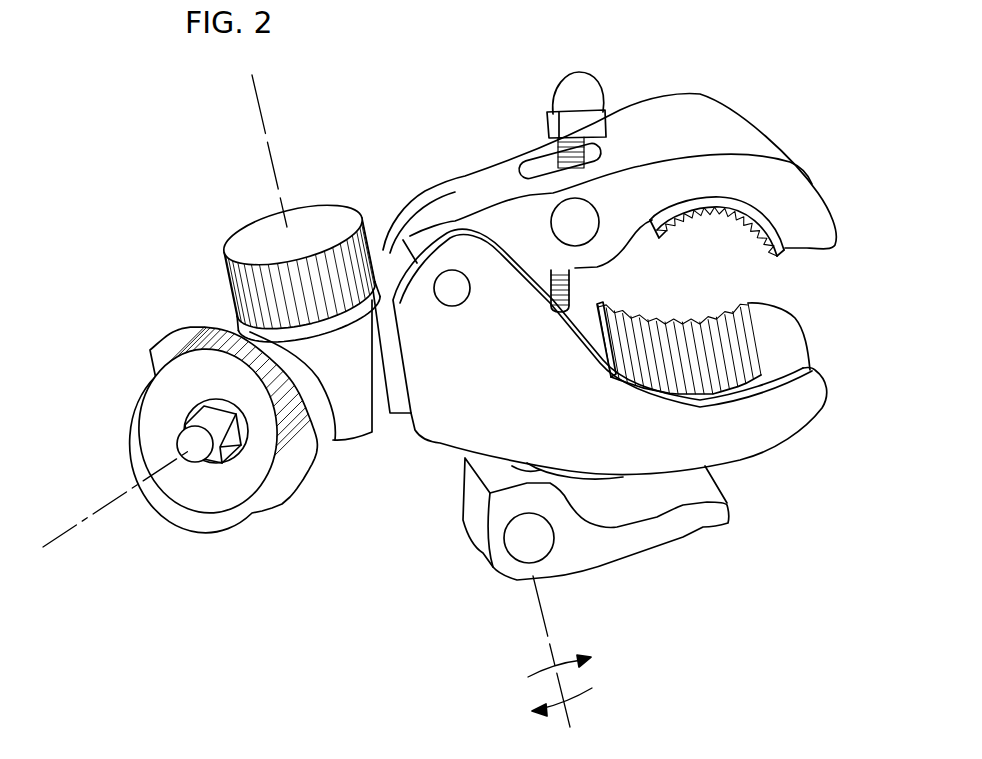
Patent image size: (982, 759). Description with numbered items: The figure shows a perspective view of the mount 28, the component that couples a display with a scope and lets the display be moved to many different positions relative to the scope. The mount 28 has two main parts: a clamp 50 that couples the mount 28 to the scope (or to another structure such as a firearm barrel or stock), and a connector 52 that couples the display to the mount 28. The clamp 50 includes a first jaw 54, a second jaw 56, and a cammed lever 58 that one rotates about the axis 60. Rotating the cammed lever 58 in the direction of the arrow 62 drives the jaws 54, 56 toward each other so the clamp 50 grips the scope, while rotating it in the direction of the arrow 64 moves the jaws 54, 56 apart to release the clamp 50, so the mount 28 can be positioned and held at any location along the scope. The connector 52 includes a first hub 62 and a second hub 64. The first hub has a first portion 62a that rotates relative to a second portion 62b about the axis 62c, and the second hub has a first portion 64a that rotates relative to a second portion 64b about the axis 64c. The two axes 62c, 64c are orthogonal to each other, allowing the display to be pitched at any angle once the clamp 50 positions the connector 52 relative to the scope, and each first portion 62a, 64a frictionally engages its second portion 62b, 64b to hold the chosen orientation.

The mount 28 is at (417, 127).
The clamp 50 is at (689, 84).
The connector 52 is at (201, 246).
The first jaw 54 is at (810, 395).
The second jaw 56 is at (806, 252).
The cammed lever 58 is at (573, 557).
The axis 60 is at (540, 632).
The arrow 62 is at (590, 686).
The first portion 62a is at (234, 512).
The second portion 62b is at (247, 330).
The axis 62c is at (129, 491).
The arrow 64 is at (530, 680).
The first portion 64a is at (352, 445).
The second portion 64b is at (325, 222).
The axis 64c is at (264, 128).